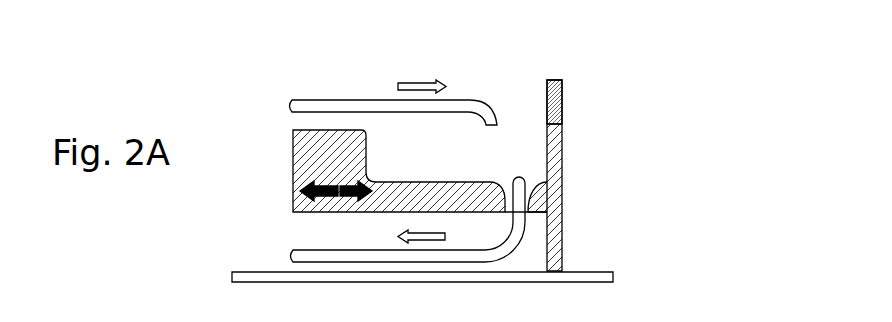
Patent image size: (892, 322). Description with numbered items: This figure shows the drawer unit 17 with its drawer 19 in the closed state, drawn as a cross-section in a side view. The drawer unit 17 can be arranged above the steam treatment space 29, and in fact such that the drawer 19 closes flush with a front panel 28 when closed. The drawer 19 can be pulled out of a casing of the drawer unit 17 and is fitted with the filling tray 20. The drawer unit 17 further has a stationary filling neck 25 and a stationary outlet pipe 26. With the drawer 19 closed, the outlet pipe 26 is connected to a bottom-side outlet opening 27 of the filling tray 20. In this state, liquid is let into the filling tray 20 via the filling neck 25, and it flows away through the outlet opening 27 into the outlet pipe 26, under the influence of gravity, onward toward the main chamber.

The drawer unit 17 is at (662, 178).
The drawer 19 is at (562, 148).
The filling tray 20 is at (525, 131).
The filling neck 25 is at (300, 100).
The outlet pipe 26 is at (300, 250).
The outlet opening 27 is at (520, 183).
The front panel 28 is at (556, 97).
The steam treatment space 29 is at (300, 313).